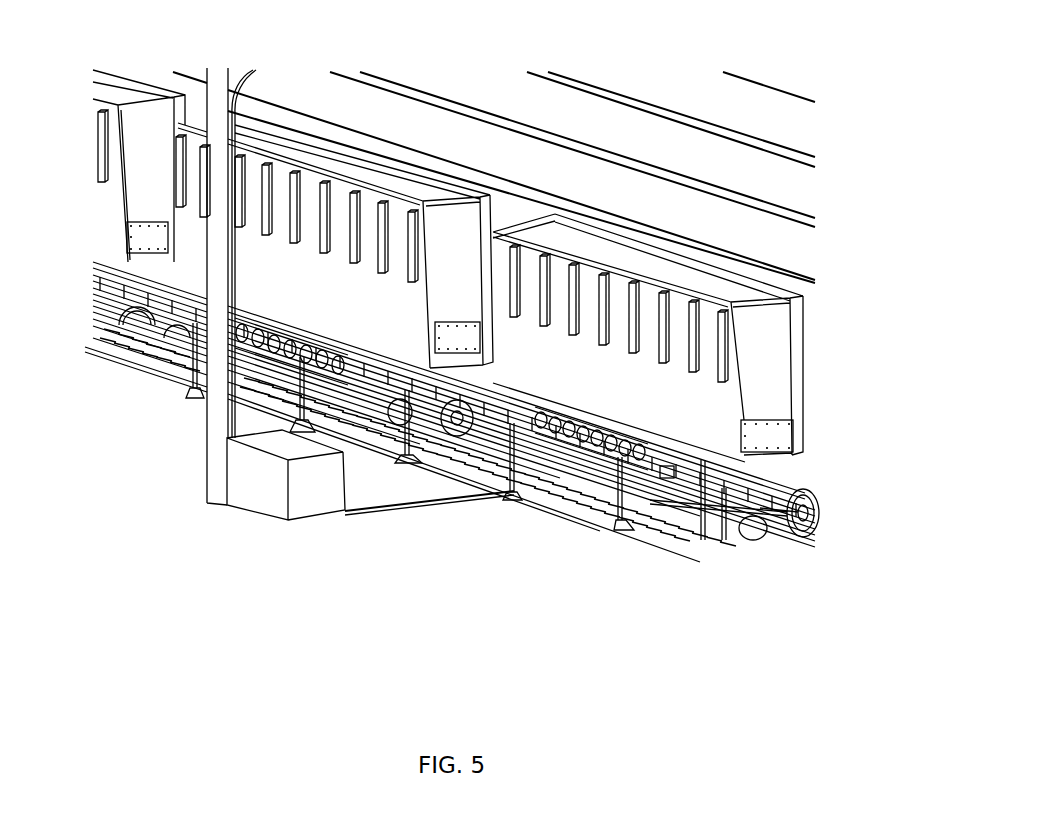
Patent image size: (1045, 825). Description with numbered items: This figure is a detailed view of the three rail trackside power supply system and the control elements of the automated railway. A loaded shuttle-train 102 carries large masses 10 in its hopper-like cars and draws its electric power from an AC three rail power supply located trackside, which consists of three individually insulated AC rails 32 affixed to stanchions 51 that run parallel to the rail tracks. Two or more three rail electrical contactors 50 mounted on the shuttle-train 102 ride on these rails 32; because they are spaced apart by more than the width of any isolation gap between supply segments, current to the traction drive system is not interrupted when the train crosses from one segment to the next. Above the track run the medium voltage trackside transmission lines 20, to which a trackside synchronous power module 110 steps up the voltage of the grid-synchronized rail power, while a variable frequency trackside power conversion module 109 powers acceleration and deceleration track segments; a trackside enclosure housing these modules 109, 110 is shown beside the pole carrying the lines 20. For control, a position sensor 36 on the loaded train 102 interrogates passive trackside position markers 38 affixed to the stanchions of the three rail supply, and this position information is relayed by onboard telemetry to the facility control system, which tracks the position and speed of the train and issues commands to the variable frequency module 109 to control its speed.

The mass 10 is at (652, 365).
The medium voltage trackside transmission line 20 is at (672, 108).
The AC rail 32 is at (555, 437).
The position sensor 36 is at (710, 522).
The passive trackside position marker 38 is at (630, 518).
The 3 rail electrical contactor 50 is at (665, 472).
The stanchion 51 is at (517, 462).
The shuttle-train 102 is at (305, 343).
The variable frequency trackside power conversion module 109 is at (251, 495).
The trackside synchronous power module 110 is at (295, 500).